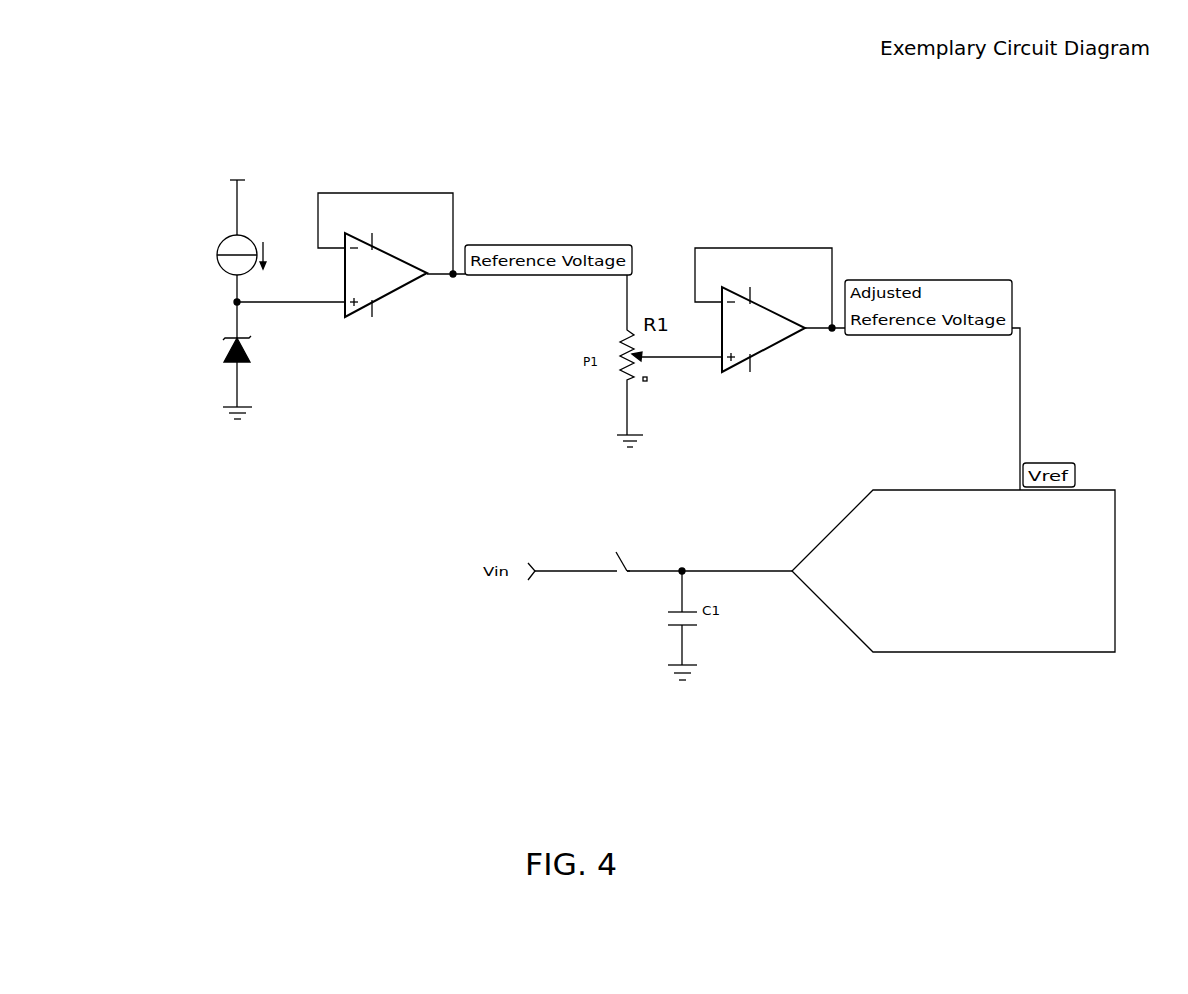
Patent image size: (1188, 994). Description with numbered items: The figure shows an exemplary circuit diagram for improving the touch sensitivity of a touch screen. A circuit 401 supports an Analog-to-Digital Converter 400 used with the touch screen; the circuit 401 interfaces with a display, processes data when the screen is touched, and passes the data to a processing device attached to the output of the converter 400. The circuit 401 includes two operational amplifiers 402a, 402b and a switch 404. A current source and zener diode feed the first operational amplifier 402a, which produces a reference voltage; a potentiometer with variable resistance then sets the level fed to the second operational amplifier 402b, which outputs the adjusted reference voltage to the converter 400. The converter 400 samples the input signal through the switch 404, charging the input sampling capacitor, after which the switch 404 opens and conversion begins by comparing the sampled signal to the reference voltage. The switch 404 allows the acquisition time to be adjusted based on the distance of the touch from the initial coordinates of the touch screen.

The Analog-to-Digital Converter (ADC) 400 is at (968, 664).
The circuit 401 is at (425, 740).
The operational amplifier 402a is at (397, 288).
The operational amplifier 402b is at (780, 342).
The switch 404 is at (626, 562).